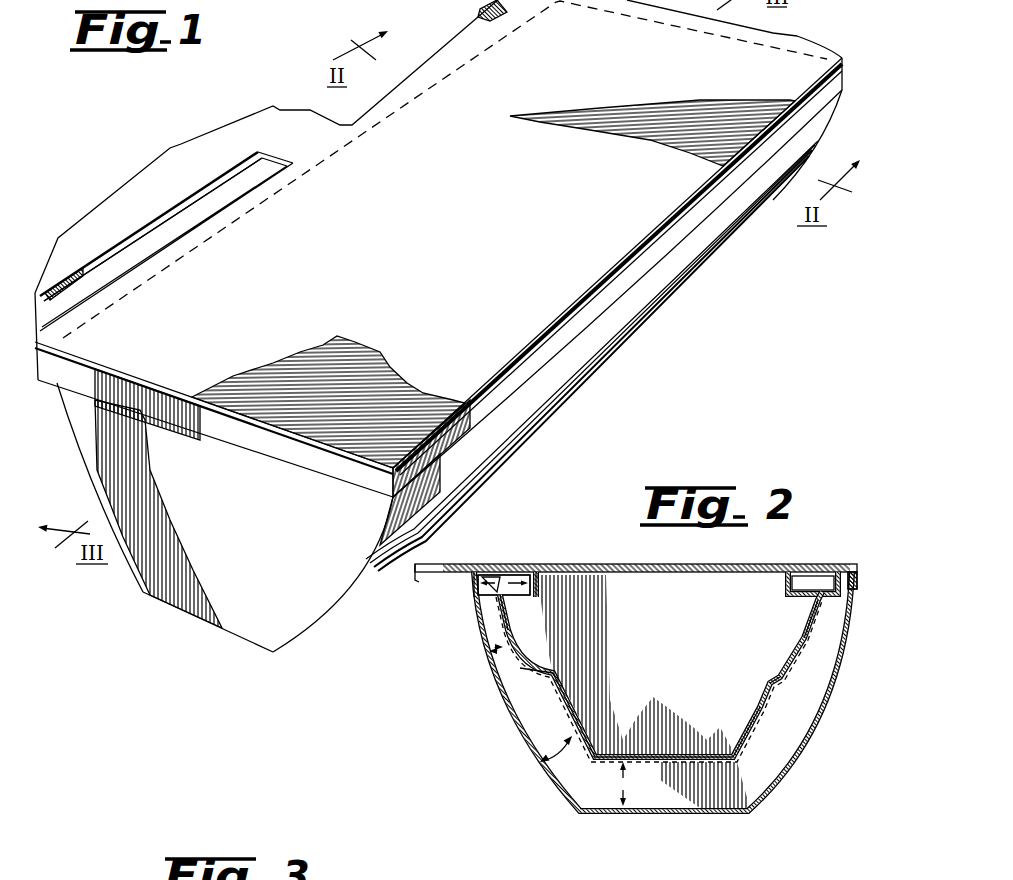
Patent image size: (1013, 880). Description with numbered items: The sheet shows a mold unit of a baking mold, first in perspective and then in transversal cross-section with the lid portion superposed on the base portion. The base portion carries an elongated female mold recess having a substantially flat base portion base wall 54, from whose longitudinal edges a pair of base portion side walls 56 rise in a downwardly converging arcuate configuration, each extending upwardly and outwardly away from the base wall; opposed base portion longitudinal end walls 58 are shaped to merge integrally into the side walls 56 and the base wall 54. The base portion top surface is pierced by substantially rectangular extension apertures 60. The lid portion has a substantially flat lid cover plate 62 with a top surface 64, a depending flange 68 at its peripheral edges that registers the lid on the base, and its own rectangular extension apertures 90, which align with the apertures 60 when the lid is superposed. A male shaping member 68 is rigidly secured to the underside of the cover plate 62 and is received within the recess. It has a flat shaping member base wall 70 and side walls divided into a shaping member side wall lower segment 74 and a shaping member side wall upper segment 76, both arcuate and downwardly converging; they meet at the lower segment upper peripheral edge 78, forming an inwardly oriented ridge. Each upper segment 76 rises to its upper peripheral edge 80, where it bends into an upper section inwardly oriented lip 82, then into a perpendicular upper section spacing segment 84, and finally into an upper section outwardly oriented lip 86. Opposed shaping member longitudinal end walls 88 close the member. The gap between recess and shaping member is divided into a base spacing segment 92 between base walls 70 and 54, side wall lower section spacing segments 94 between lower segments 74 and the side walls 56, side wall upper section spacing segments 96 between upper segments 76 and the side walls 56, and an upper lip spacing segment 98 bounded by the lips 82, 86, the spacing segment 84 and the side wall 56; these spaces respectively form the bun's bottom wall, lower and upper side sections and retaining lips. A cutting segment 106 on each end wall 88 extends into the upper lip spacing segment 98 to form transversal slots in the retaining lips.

In FIG. 2, the base portion base wall 54 is at (667, 814).
In FIG. 1, the base portion side walls 56 is at (637, 306).
In FIG. 2, the base portion side walls 56 is at (526, 745).
In FIG. 1, the base portion longitudinal end walls 58 is at (152, 588).
In FIG. 1, the extension apertures 60 is at (227, 178).
In FIG. 2, the extension apertures 60 is at (419, 583).
In FIG. 2, the lid cover plate 62 is at (677, 565).
In FIG. 1, the top surface 64 is at (620, 230).
In FIG. 1, the male shaping member 68 is at (97, 383).
In FIG. 2, the male shaping member 68 is at (860, 593).
In FIG. 2, the shaping member base wall 70 is at (565, 790).
In FIG. 2, the shaping member side wall lower segment 74 is at (565, 700).
In FIG. 2, the shaping member side wall upper segment 76 is at (488, 648).
In FIG. 2, the shaping member side wall lower segment upper peripheral edge 78 is at (553, 676).
In FIG. 2, the shaping member side wall upper section upper peripheral edge 80 is at (507, 628).
In FIG. 2, the upper section inwardly oriented lip 82 is at (573, 563).
In FIG. 2, the upper section spacing segment 84 is at (548, 563).
In FIG. 2, the upper section outwardly oriented lip 86 is at (503, 563).
In FIG. 2, the shaping member longitudinal end walls 88 is at (718, 597).
In FIG. 1, the extension apertures 90 is at (143, 230).
In FIG. 2, the extension apertures 90 is at (430, 563).
In FIG. 2, the base spacing segment 92 is at (620, 792).
In FIG. 2, the side wall lower section spacing segments 94 is at (560, 752).
In FIG. 2, the side wall upper section spacing segments 96 is at (497, 655).
In FIG. 2, the upper lip spacing segment 98 is at (483, 593).
In FIG. 2, the cutting segment 106 is at (813, 578).